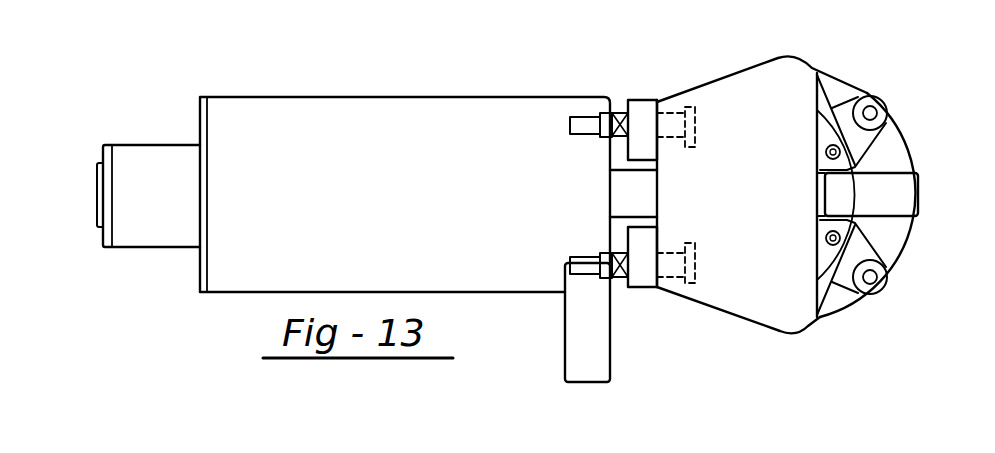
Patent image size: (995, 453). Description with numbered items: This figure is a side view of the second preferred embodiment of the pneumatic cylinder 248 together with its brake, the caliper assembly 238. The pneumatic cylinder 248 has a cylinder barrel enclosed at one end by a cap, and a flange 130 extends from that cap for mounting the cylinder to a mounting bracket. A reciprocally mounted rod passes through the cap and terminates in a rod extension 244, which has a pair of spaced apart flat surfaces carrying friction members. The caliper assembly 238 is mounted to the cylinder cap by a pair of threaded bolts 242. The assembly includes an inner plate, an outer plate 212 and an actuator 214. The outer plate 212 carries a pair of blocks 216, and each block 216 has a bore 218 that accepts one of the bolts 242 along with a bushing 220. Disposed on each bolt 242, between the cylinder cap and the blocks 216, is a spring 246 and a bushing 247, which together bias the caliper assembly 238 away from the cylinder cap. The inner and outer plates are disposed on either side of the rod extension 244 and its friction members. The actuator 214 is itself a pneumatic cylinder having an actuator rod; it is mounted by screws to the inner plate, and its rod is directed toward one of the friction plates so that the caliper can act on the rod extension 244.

The pneumatic cylinder 248 is at (400, 94).
The flange 130 is at (595, 366).
The threaded bolts 242 is at (570, 126).
The spring 246 is at (614, 112).
The bushing 247 is at (608, 136).
The rod extension 244 is at (633, 197).
The blocks 216 is at (642, 100).
The bore 218 is at (642, 140).
The outer plate 212 is at (743, 85).
The actuator 214 is at (893, 147).
The bushing 220 is at (868, 96).
The caliper assembly 238 is at (817, 352).